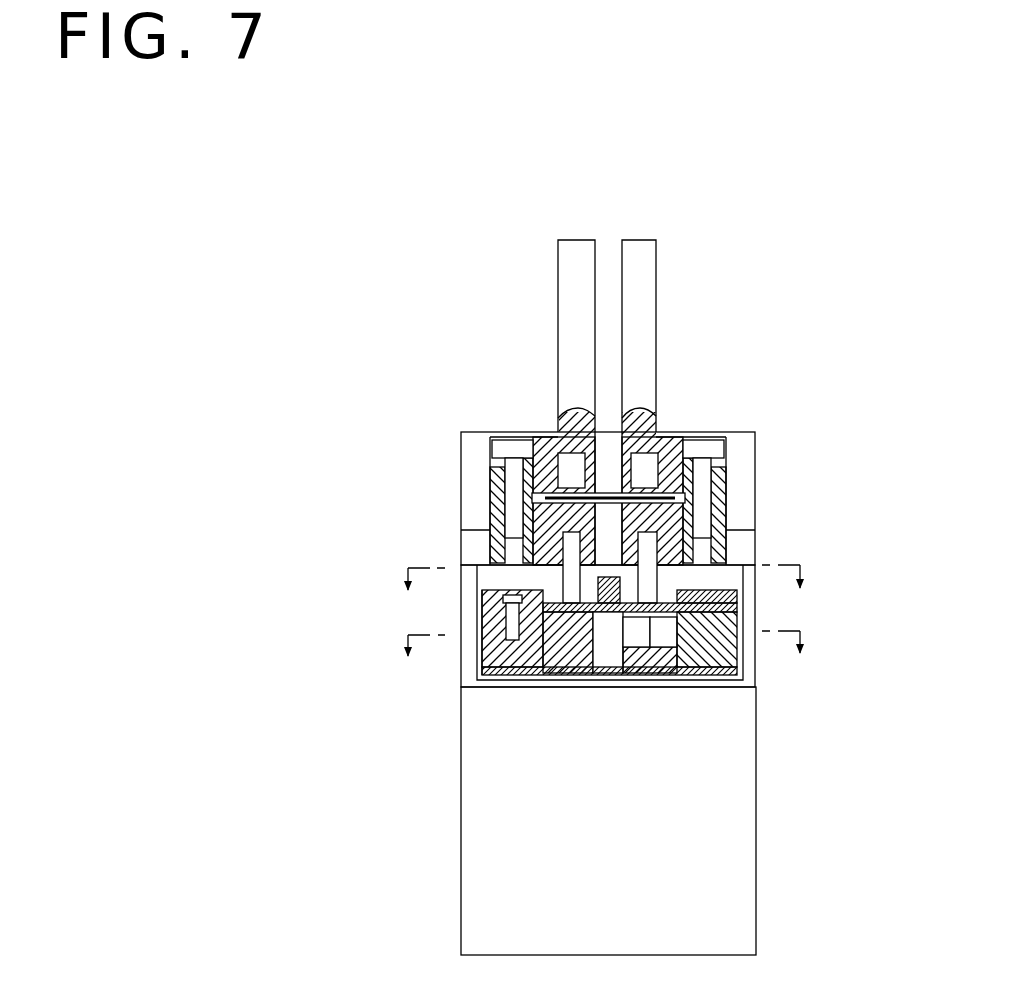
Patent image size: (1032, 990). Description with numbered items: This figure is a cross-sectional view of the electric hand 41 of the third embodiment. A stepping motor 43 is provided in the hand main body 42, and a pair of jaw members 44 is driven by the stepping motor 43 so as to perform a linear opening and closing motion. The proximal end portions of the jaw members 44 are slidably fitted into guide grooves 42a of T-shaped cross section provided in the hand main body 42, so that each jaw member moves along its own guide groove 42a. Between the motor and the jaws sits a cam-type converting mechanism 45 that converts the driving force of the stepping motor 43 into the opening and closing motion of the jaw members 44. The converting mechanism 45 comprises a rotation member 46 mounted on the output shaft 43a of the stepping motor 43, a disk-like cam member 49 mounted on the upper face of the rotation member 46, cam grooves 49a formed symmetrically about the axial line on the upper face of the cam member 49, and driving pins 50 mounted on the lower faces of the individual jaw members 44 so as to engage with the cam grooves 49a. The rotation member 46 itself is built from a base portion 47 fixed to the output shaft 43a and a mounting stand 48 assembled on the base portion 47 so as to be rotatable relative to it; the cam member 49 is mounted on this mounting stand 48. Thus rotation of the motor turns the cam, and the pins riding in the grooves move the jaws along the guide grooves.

The electric hand 41 is at (640, 592).
The hand main body 42 is at (748, 668).
The guide grooves 42a is at (745, 545).
The stepping motor 43 is at (756, 718).
The output shaft 43a is at (603, 658).
The jaw members 44 is at (575, 300).
The converting mechanism 45 is at (842, 539).
The rotation member 46 is at (478, 653).
The base portion 47 is at (553, 660).
The mounting stand 48 is at (485, 622).
The cam member 49 is at (740, 600).
The cam grooves 49a is at (553, 556).
The driving pins 50 is at (568, 492).